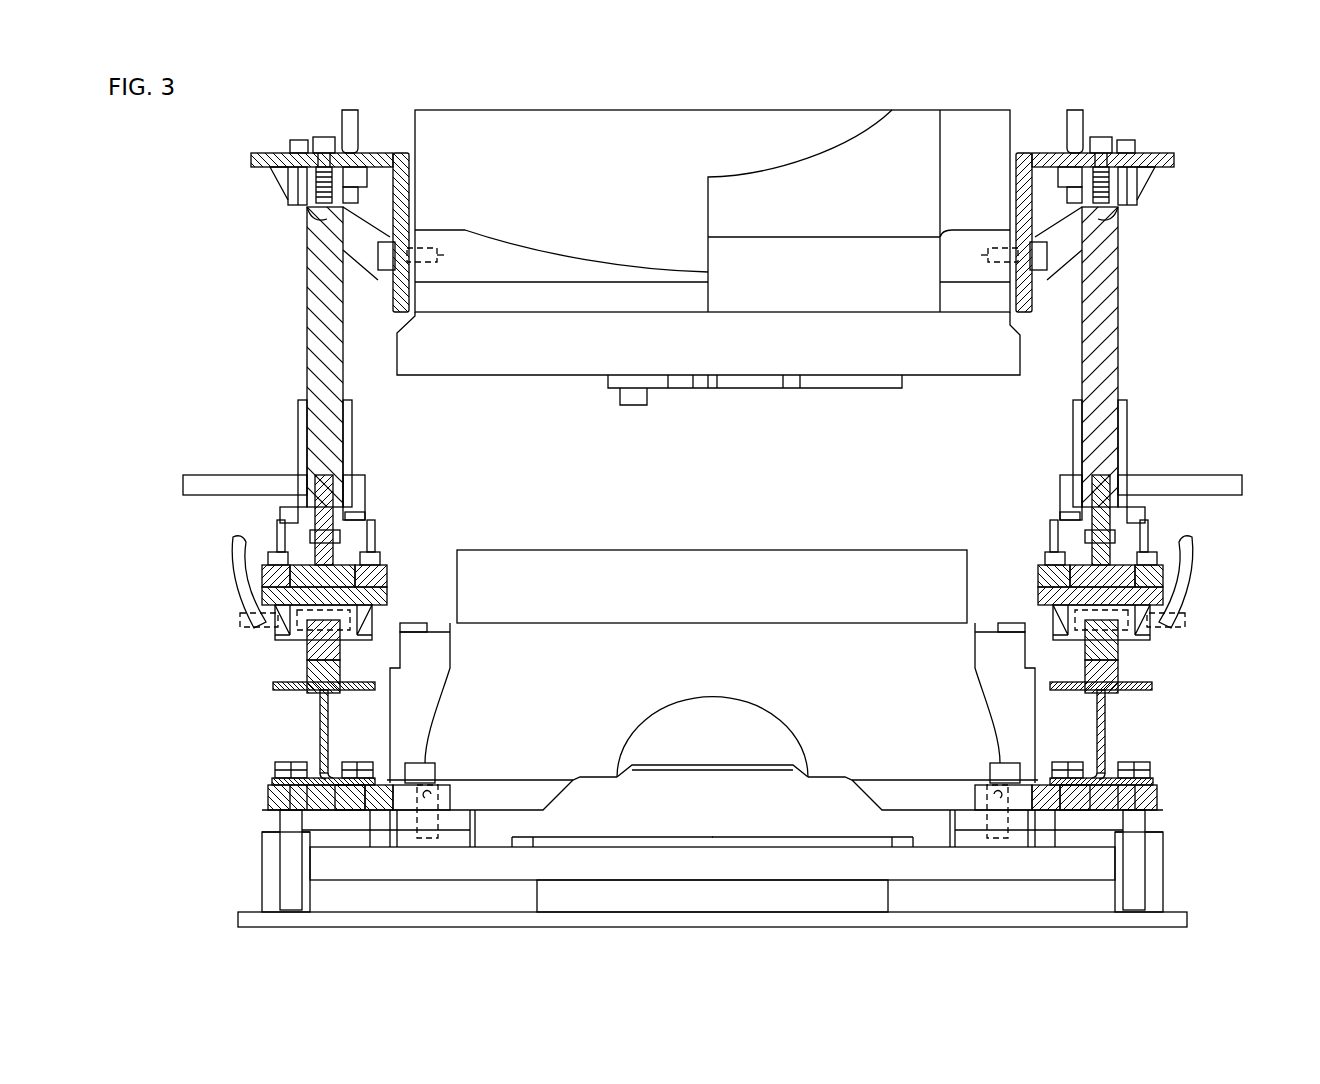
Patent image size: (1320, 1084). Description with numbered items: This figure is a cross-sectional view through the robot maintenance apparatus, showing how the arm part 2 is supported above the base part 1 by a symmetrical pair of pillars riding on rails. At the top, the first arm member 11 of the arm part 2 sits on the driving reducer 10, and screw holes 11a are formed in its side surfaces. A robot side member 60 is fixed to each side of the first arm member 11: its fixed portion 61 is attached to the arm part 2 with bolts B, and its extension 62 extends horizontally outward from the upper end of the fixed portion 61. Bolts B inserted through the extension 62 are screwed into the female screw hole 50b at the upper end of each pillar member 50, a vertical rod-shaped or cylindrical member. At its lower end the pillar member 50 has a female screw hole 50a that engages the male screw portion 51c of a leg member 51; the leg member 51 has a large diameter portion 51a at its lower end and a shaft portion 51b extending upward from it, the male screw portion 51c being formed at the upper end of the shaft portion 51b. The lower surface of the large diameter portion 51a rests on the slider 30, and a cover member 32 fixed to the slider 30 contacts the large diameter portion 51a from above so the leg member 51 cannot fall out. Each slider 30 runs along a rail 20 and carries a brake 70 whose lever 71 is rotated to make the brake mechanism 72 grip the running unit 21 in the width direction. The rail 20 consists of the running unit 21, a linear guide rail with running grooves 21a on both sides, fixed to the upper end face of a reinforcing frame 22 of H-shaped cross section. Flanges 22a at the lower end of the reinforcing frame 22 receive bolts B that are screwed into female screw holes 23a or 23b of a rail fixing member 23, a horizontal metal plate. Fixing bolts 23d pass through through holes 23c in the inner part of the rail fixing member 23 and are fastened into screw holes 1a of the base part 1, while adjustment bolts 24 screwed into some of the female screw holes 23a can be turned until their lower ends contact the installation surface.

The base part 1 is at (878, 782).
The screw hole 1a is at (423, 828).
The arm part 2 is at (708, 223).
The reducer 10 is at (712, 623).
The first arm member 11 is at (549, 143).
The screw hole 11a is at (440, 254).
The rail 20 is at (294, 668).
The running unit 21 is at (352, 648).
The running groove 21a is at (310, 640).
The reinforcing frame 22 is at (320, 735).
The flange 22a is at (272, 780).
The rail fixing member 23 is at (448, 800).
The female screw hole 23a is at (270, 805).
The female screw hole 23b is at (352, 792).
The through hole 23c is at (432, 792).
The fixing bolt 23d is at (423, 762).
The adjustment bolt 24 is at (290, 855).
The slider 30 is at (406, 597).
The cover member 32 is at (458, 566).
The pillar member 50 is at (307, 285).
The female screw hole 50a is at (318, 465).
The female screw hole 50b is at (318, 207).
The leg member 51 is at (298, 525).
The large diameter portion 51a is at (378, 572).
The shaft portion 51b is at (340, 537).
The male screw portion 51c is at (350, 513).
The robot side member 60 is at (719, 183).
The fixed portion 61 is at (410, 180).
The extension 62 is at (262, 152).
The brake 70 is at (708, 585).
The lever 71 is at (238, 573).
The brake mechanism 72 is at (248, 620).
The bolt B is at (318, 137).